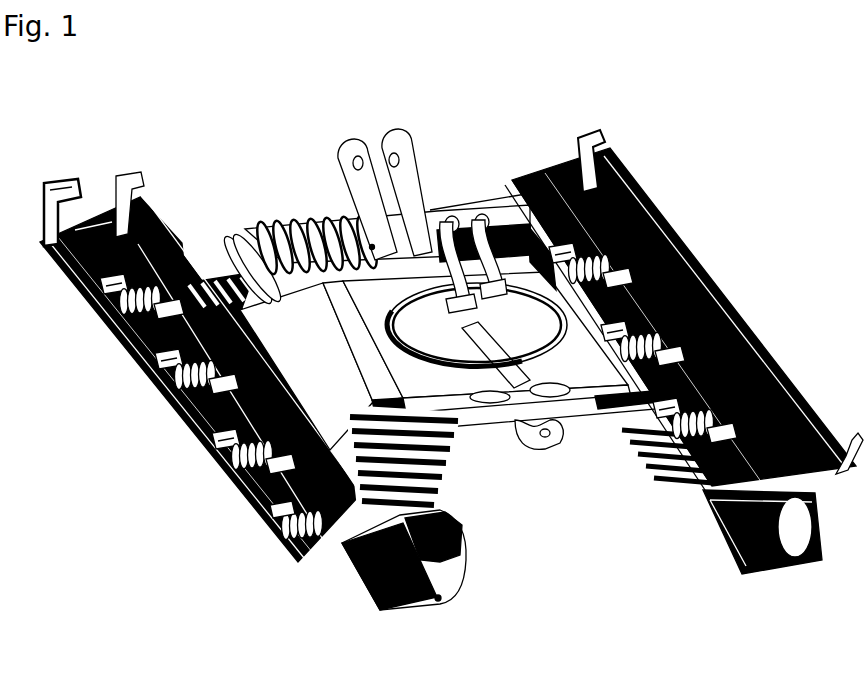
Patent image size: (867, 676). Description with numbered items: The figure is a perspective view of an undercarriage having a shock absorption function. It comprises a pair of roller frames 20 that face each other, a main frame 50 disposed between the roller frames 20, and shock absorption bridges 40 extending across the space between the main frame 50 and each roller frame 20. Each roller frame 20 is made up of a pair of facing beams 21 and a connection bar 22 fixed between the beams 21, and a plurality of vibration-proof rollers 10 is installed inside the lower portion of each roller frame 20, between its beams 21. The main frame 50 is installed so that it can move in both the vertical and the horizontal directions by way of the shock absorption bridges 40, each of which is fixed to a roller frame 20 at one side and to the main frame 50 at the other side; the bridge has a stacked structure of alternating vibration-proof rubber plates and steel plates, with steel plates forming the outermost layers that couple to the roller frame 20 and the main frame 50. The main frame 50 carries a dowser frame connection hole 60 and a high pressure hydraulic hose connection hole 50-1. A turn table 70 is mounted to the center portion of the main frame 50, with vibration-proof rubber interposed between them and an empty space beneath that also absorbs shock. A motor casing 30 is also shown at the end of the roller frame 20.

The vibration-proof roller 10 is at (302, 543).
The roller frame 20 is at (686, 245).
The beam 21 is at (63, 273).
The connection bar 22 is at (160, 223).
The motor casing 30 is at (450, 570).
The shock absorption bridge 40 is at (445, 473).
The main frame 50 is at (583, 358).
The high pressure hydraulic hose connection hole 50-1 is at (560, 397).
The dowser frame connection hole 60 is at (257, 248).
The turn table 70 is at (473, 333).